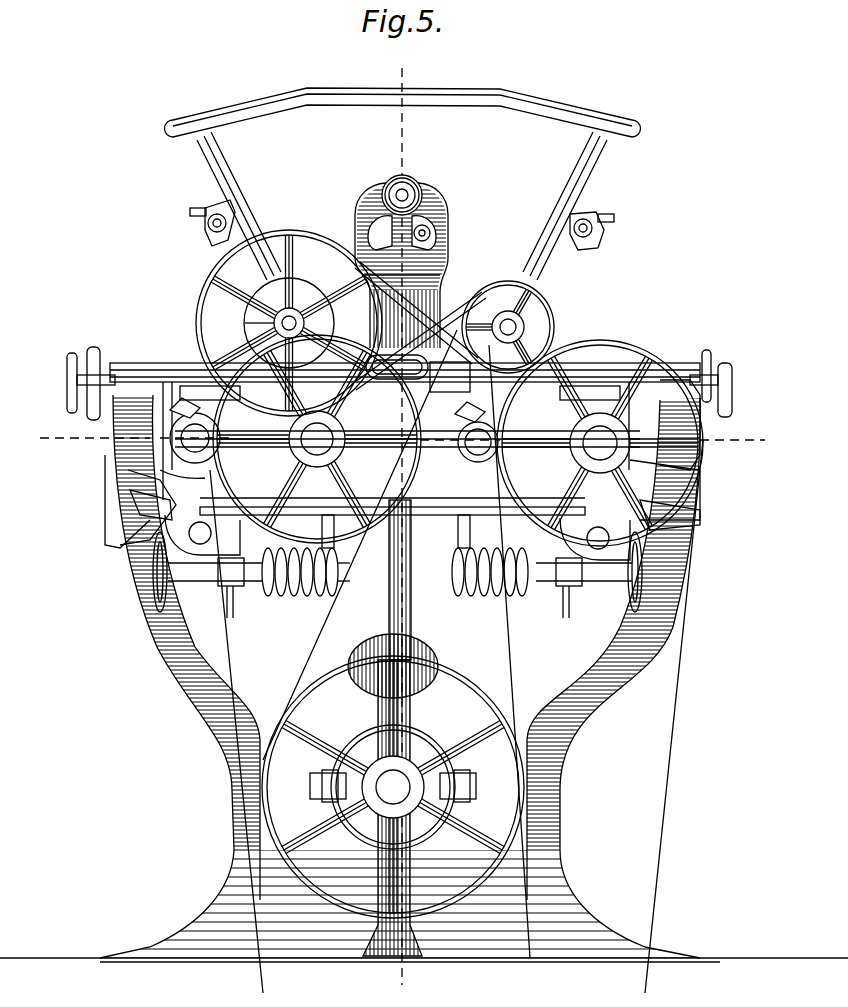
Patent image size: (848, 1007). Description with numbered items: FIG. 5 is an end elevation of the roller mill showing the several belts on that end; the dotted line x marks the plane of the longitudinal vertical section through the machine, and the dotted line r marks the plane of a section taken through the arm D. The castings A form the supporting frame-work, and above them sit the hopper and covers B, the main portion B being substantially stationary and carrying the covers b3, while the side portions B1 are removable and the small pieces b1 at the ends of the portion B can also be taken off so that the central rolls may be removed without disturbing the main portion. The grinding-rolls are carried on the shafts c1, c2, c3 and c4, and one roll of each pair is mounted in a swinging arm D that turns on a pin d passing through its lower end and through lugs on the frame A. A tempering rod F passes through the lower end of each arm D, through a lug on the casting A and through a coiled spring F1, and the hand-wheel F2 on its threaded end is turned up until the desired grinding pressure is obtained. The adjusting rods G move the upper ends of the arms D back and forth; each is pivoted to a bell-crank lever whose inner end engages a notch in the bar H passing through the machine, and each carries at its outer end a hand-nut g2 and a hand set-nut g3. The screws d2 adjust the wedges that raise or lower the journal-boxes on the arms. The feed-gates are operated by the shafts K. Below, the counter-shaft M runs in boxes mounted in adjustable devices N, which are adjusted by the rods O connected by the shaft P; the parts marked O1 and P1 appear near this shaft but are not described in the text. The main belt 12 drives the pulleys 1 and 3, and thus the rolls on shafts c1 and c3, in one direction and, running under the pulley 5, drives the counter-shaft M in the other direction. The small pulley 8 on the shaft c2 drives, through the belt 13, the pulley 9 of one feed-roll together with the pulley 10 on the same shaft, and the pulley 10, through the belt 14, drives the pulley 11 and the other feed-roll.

The pulley 1 is at (648, 362).
The pulley 3 is at (403, 470).
The pulley 5 is at (300, 690).
The small pulley 8 is at (470, 460).
The pulley 9 is at (336, 248).
The pulley 10 is at (245, 324).
The pulley 11 is at (500, 306).
The main belt 12 is at (236, 659).
The belt 13 is at (380, 408).
The belt 14 is at (372, 318).
The frame casting A is at (498, 567).
The hopper B is at (395, 244).
The side portion B1 is at (186, 363).
The swinging arm D is at (424, 671).
The tempering rod F is at (300, 595).
The coiled spring F1 is at (286, 594).
The hand-wheel F2 is at (170, 590).
The adjusting rod G is at (166, 364).
The bar H is at (428, 366).
The feed-gate shaft K is at (228, 224).
The counter-shaft M is at (393, 806).
The adjustable device N is at (424, 698).
The rod O is at (404, 562).
The eye O1 is at (445, 222).
The shaft P is at (407, 191).
The spindle collar P1 is at (388, 182).
The removable piece b1 is at (252, 386).
The cover b3 is at (240, 120).
The roll shaft c1 is at (600, 443).
The roll shaft c2 is at (476, 432).
The roll shaft c3 is at (317, 439).
The roll shaft c4 is at (190, 438).
The pivot pin d is at (397, 529).
The screw d2 is at (130, 502).
The hand-nut g2 is at (92, 347).
The hand set-nut g3 is at (70, 356).
The section line r is at (399, 444).
The section line x is at (394, 526).